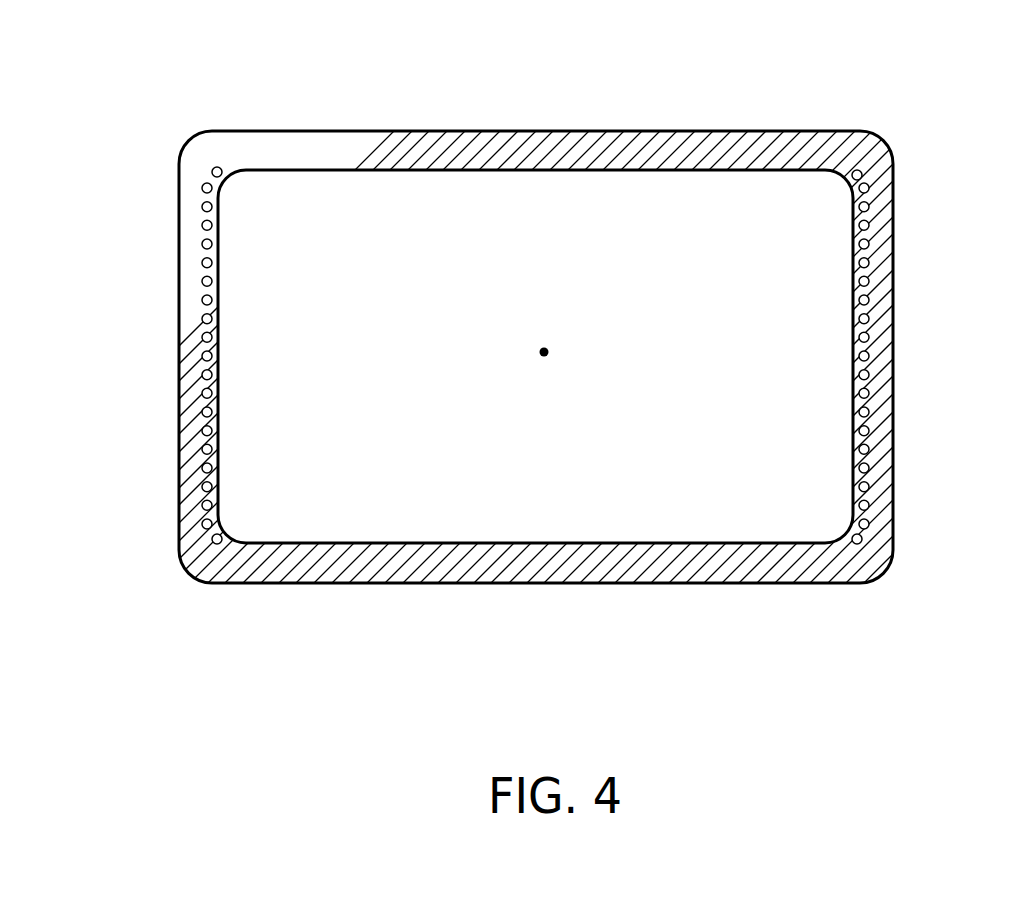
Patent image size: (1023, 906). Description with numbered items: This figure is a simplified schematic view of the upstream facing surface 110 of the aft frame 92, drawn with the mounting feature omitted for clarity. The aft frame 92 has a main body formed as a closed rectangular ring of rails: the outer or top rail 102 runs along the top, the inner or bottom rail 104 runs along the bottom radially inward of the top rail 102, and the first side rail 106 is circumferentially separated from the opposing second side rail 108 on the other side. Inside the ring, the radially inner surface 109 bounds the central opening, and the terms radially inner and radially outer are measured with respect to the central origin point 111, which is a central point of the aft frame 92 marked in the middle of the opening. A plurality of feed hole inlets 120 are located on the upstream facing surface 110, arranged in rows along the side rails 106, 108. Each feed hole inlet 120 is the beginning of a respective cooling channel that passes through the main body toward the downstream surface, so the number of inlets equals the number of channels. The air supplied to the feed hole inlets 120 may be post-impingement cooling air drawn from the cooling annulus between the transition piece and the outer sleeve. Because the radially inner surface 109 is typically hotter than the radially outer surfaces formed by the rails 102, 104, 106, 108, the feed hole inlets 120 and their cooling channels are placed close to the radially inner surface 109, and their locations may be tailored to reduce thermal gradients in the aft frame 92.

The aft frame 92 is at (291, 66).
The outer rail 102 is at (505, 130).
The inner rail 104 is at (517, 584).
The first side rail 106 is at (894, 332).
The second side rail 108 is at (178, 350).
The radially inner surface 109 is at (851, 278).
The upstream facing surface 110 is at (865, 148).
The central origin point 111 is at (549, 357).
The feed hole inlets 120 is at (200, 483).